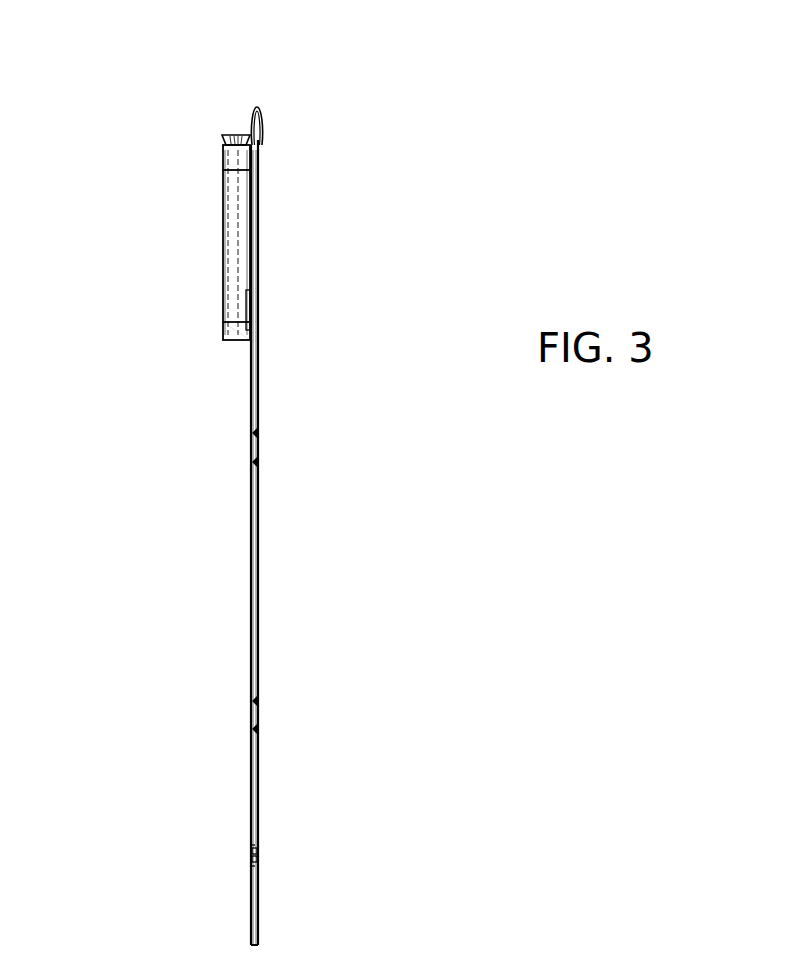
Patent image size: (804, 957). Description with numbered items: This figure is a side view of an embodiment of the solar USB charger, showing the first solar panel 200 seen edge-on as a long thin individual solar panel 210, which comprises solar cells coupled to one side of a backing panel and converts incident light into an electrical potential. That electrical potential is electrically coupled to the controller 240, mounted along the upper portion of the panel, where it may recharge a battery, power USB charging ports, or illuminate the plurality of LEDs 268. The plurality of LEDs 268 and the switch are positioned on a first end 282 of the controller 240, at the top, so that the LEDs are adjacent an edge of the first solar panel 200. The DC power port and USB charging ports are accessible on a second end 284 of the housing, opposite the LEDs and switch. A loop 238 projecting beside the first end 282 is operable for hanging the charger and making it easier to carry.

The first solar panel 200 is at (191, 484).
The individual solar panel 210 is at (250, 607).
The controller 240 is at (218, 147).
The first end 282 is at (222, 141).
The loop 238 is at (262, 120).
The plurality of LEDs 268 is at (229, 133).
The second end 284 is at (218, 350).